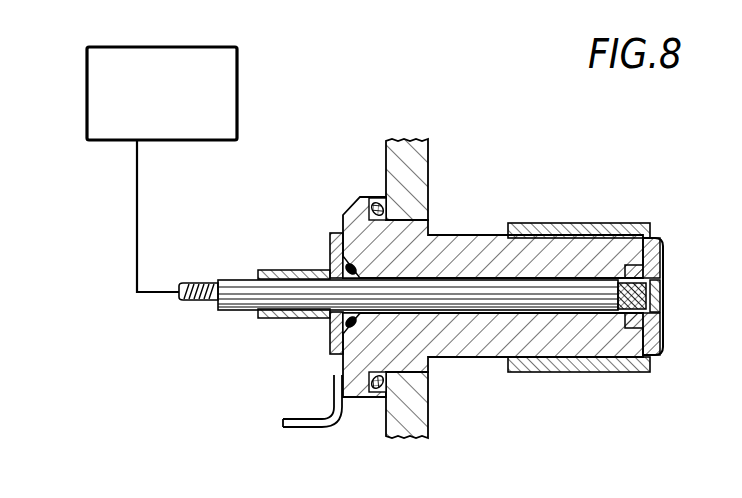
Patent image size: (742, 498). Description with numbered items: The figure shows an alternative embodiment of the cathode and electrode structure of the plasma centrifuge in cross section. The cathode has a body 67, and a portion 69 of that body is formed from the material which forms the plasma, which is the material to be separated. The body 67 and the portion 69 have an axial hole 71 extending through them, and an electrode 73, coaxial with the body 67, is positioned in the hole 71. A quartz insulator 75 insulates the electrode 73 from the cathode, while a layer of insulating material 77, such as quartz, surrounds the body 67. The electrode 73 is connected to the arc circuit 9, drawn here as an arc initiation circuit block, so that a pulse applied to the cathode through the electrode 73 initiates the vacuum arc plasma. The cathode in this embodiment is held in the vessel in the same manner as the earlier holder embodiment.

The arc circuit 9 is at (237, 98).
The body 67 is at (590, 252).
The portion 69 is at (663, 240).
The axial hole 71 is at (661, 293).
The electrode 73 is at (664, 314).
The quartz insulator 75 is at (661, 266).
The layer of insulating material 77 is at (636, 372).